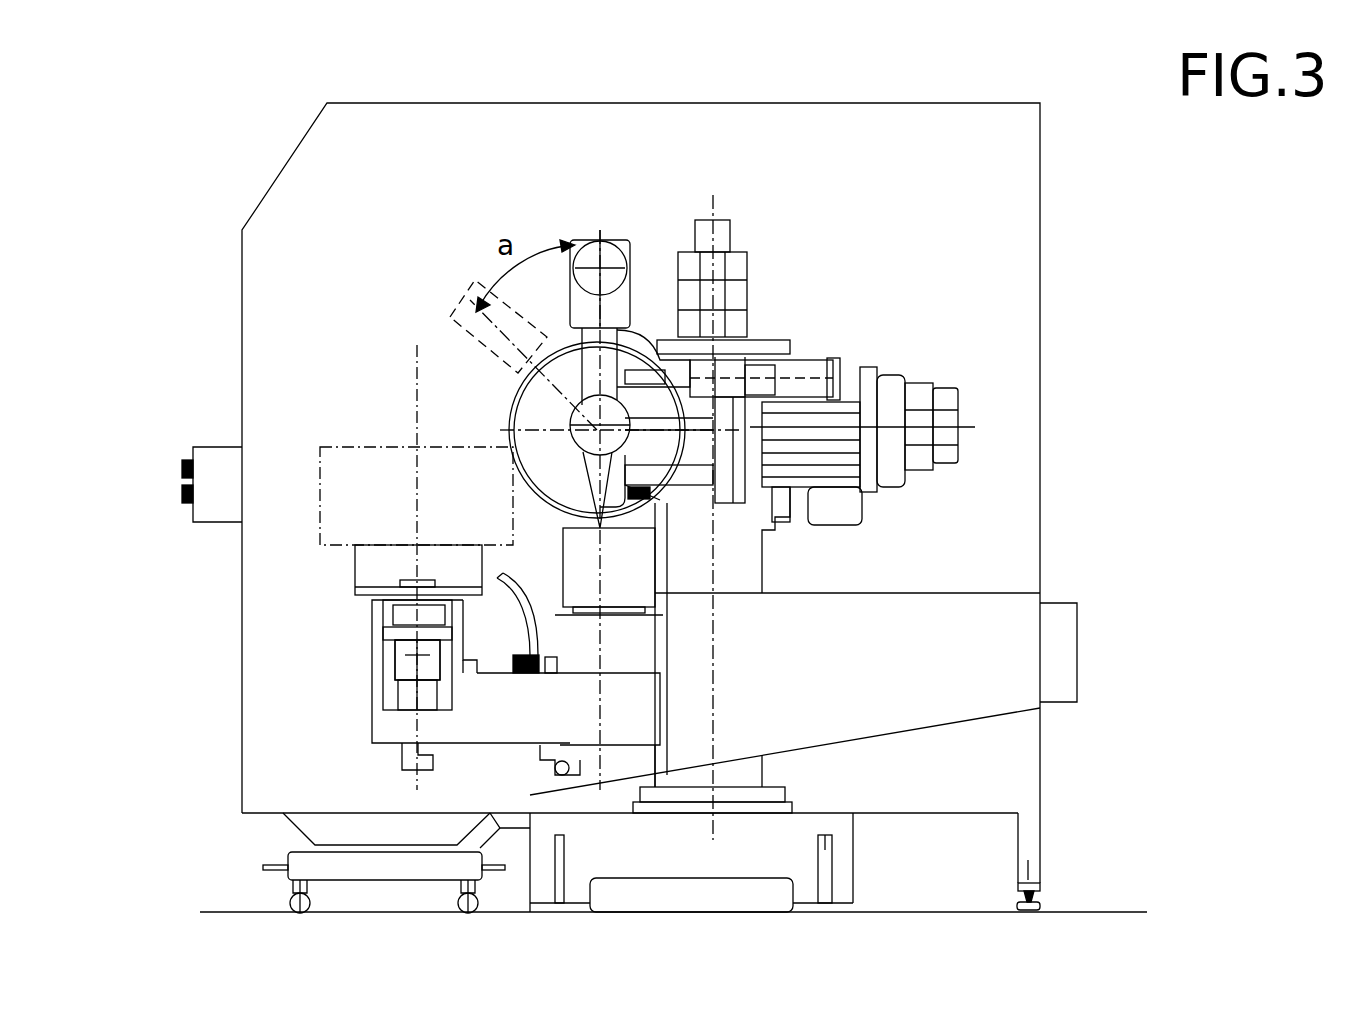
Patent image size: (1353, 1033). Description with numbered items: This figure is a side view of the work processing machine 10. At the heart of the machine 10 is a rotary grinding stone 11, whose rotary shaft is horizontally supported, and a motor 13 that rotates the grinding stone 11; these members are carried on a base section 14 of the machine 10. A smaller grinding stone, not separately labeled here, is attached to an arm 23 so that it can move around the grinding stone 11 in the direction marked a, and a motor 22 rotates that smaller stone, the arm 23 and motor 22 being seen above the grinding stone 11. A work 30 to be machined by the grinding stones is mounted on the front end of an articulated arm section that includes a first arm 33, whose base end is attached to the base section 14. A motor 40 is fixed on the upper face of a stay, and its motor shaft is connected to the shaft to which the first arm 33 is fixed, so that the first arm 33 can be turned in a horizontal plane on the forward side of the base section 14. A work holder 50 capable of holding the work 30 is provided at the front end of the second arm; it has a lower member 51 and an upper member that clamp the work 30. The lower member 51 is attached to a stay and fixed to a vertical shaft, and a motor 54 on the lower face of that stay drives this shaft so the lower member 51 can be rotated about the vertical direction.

The work processing machine 10 is at (970, 103).
The rotary grinding stone 11 is at (512, 403).
The motor 13 is at (850, 368).
The base section 14 is at (740, 571).
The motor 22 is at (604, 262).
The arm 23 is at (580, 345).
The work 30 is at (335, 465).
The first arm 33 is at (483, 720).
The motor 40 is at (628, 583).
The work holder 50 is at (348, 658).
The lower member 51 is at (390, 590).
The motor 54 is at (410, 668).